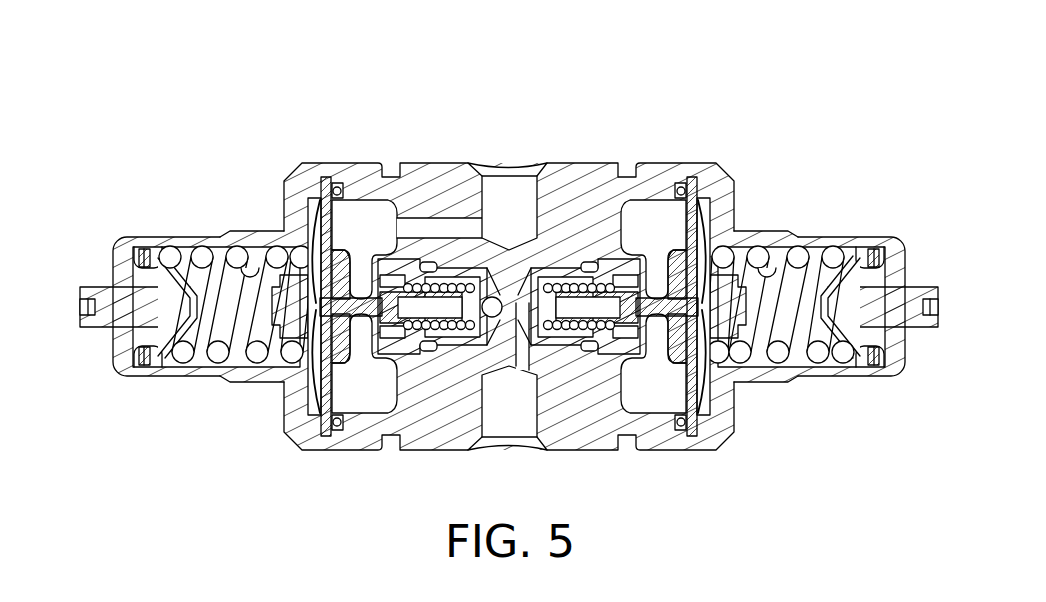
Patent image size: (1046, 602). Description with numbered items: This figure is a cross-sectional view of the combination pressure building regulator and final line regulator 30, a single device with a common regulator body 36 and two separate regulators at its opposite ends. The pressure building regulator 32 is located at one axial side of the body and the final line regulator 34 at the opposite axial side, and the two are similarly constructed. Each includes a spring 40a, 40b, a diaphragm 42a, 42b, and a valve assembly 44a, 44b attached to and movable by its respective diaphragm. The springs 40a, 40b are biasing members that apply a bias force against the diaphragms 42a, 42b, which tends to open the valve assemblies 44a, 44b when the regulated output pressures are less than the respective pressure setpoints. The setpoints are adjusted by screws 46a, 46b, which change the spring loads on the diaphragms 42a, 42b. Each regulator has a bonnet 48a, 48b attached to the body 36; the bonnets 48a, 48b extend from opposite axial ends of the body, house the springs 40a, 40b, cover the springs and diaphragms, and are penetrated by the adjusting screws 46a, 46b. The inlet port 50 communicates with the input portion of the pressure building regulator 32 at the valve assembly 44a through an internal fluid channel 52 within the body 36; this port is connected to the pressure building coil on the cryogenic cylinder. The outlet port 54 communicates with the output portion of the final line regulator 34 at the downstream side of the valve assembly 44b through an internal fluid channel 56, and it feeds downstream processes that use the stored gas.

The combination pressure building regulator and final line regulator 30 is at (256, 110).
The pressure building regulator 32 is at (919, 230).
The final line regulator 34 is at (99, 231).
The regulator body 36 is at (582, 163).
The spring 40a is at (817, 360).
The spring 40b is at (182, 360).
The diaphragm 42a is at (700, 219).
The diaphragm 42b is at (318, 219).
The valve assembly 44a is at (636, 360).
The valve assembly 44b is at (384, 360).
The screw 46a is at (944, 292).
The screw 46b is at (78, 292).
The bonnet 48a is at (892, 364).
The bonnet 48b is at (118, 362).
The inlet port 50 is at (515, 450).
The internal fluid channel 52 is at (545, 366).
The outlet port 54 is at (505, 167).
The internal fluid channel 56 is at (436, 227).